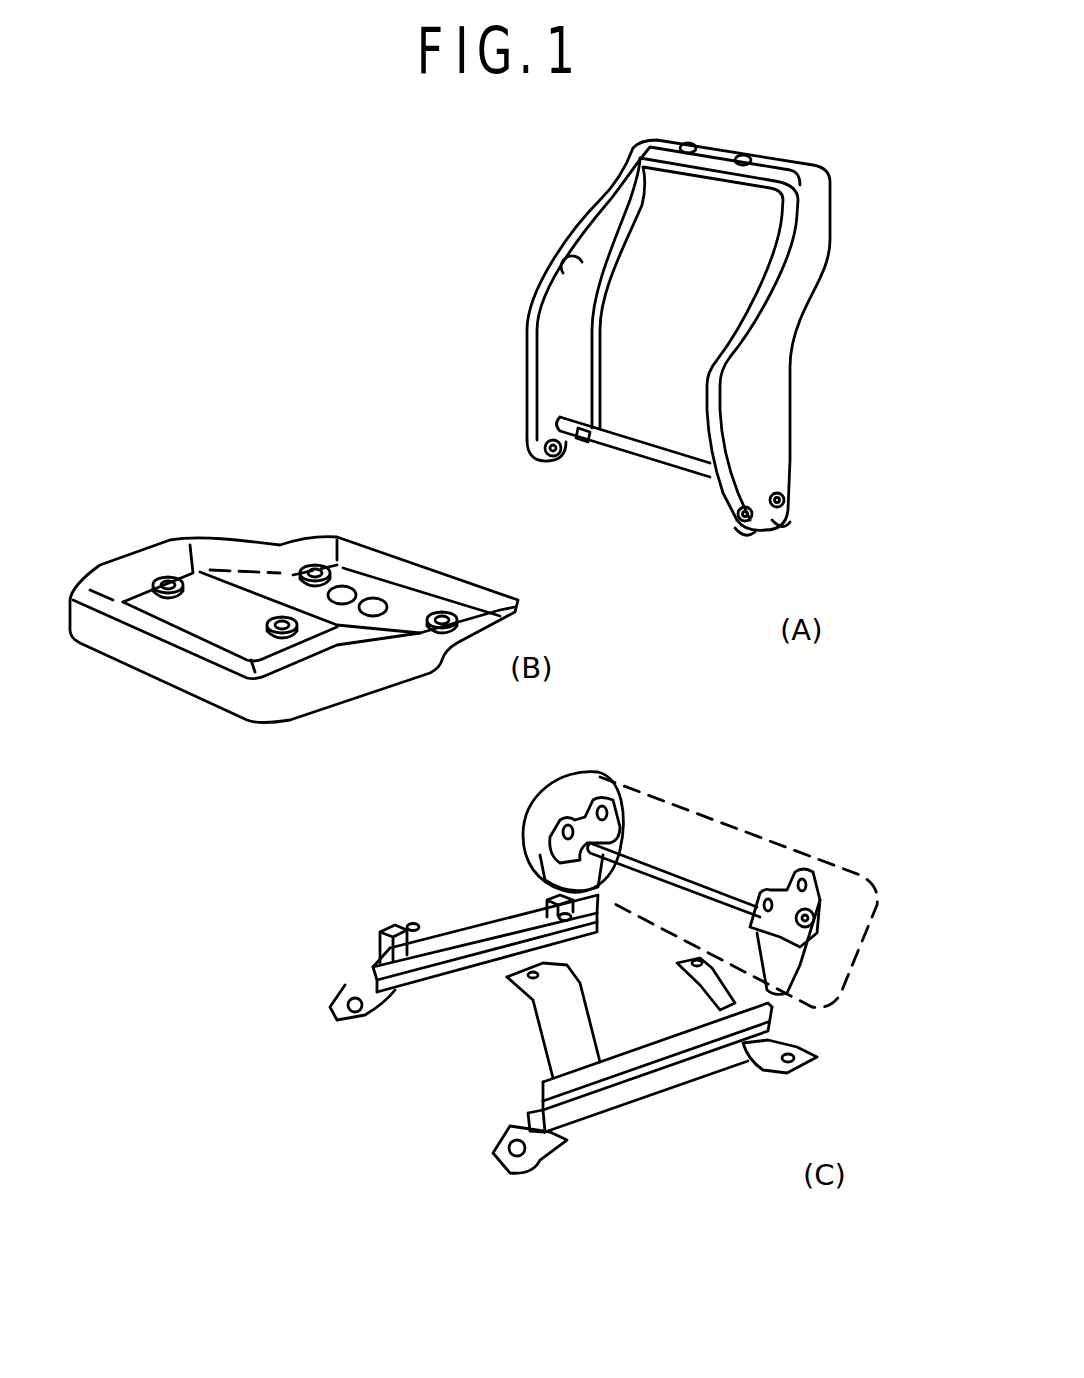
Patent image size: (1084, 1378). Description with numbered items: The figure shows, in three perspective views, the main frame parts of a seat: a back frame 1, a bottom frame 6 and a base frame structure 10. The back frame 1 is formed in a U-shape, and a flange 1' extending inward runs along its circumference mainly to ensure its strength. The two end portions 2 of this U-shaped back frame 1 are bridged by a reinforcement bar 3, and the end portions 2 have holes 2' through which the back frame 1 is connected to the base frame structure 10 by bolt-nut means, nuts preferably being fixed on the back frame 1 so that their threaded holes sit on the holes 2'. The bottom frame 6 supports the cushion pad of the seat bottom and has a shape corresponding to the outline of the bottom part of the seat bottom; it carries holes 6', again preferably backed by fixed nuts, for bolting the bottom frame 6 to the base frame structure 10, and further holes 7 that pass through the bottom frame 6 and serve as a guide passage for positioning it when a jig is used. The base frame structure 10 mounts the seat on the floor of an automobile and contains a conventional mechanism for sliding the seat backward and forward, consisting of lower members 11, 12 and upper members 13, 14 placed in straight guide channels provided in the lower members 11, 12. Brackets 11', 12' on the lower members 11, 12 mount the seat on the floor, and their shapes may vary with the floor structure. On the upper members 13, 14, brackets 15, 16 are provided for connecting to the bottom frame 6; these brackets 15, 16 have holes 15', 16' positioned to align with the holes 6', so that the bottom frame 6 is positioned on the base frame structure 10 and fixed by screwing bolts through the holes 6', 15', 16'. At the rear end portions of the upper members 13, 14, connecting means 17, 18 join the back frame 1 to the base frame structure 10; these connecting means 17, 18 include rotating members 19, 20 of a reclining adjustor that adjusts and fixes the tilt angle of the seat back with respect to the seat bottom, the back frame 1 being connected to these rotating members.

The back frame 1 is at (740, 335).
The flange 1' is at (541, 254).
The end portions 2 is at (666, 474).
The holes 2' is at (766, 556).
The reinforcement bar 3 is at (660, 482).
The bottom frame 6 is at (294, 581).
The holes 6' is at (305, 671).
The holes 7 is at (380, 603).
The base frame structure 10 is at (773, 784).
The lower member 11 is at (650, 1092).
The bracket 11' is at (662, 1140).
The lower member 12 is at (485, 971).
The bracket 12' is at (366, 1027).
The upper member 13 is at (587, 1077).
The upper member 14 is at (493, 912).
The bracket 15 is at (612, 1026).
The hole 15' is at (615, 967).
The bracket 16 is at (433, 891).
The hole 16' is at (526, 832).
The connecting means 17 is at (860, 902).
The connecting means 18 is at (573, 810).
The rotating member 19 is at (814, 878).
The rotating member 20 is at (632, 797).